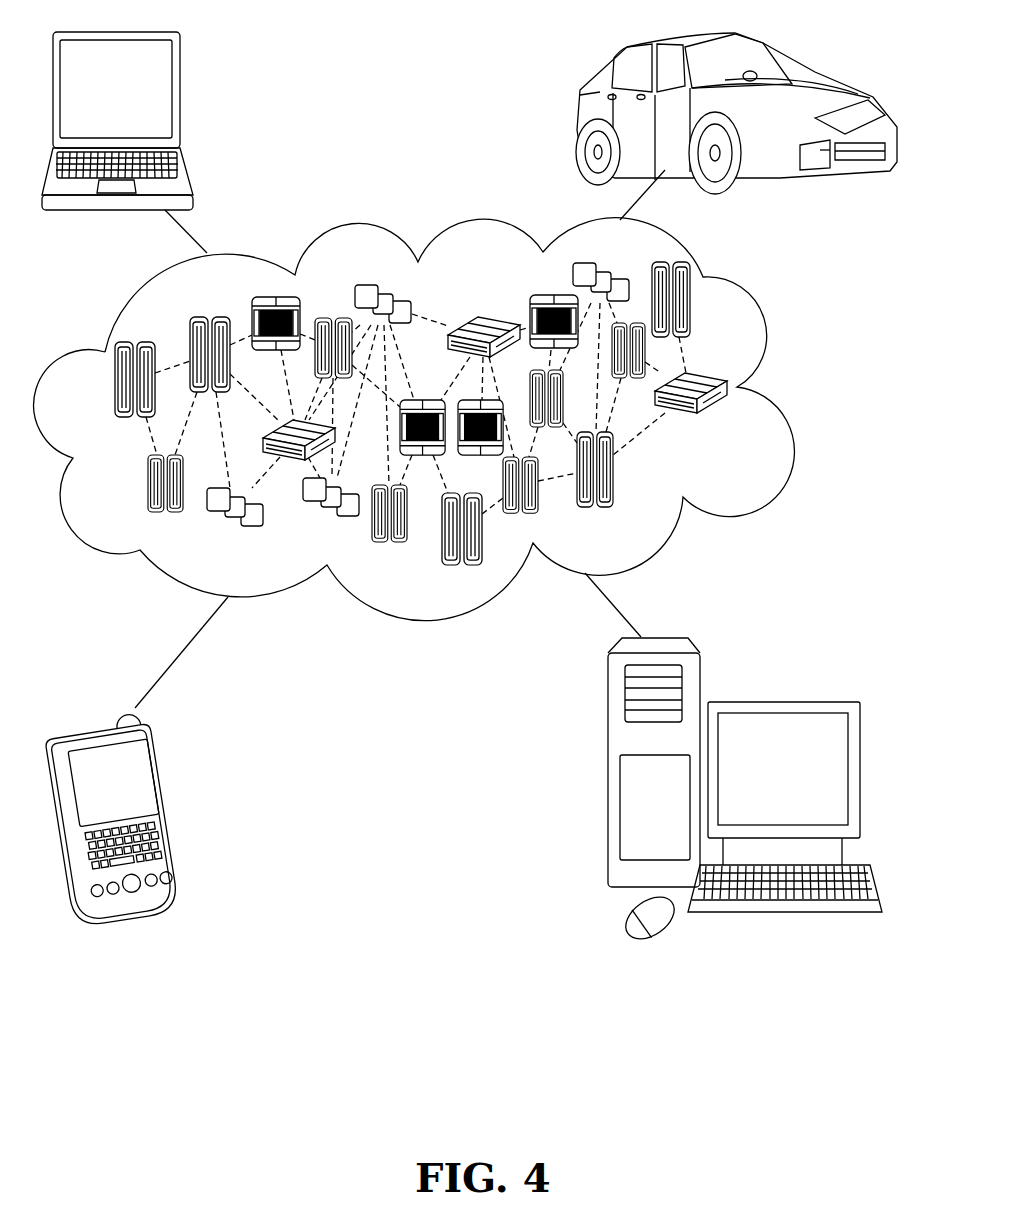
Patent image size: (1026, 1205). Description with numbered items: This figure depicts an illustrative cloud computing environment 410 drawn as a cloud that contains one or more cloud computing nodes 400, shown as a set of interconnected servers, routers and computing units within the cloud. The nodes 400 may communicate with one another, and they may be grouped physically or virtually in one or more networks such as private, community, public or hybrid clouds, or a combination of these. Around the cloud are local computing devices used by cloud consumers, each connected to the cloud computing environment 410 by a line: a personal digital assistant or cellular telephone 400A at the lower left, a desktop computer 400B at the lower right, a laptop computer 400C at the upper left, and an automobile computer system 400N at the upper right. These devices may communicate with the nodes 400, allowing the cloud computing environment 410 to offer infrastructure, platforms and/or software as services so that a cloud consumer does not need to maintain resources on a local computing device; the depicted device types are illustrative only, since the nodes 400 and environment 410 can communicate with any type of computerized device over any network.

The cloud computing nodes 400 is at (444, 419).
The cloud computing environment 410 is at (782, 394).
The personal digital assistant (PDA) or cellular telephone 400A is at (172, 800).
The desktop computer 400B is at (780, 701).
The laptop computer 400C is at (181, 101).
The automobile computer system 400N is at (580, 117).